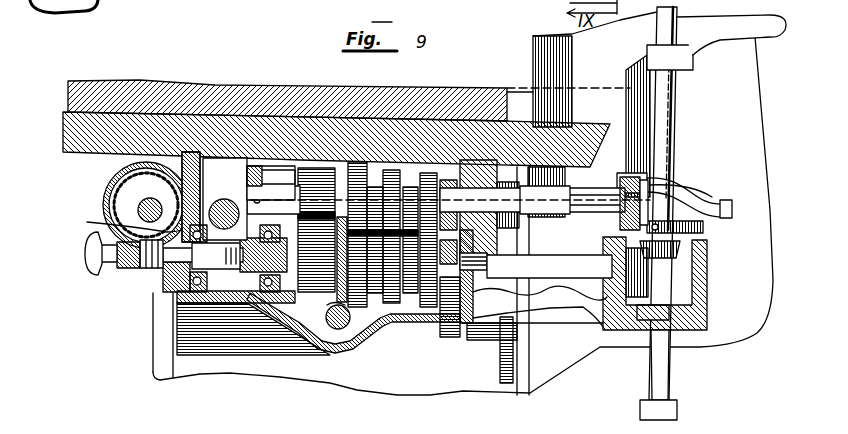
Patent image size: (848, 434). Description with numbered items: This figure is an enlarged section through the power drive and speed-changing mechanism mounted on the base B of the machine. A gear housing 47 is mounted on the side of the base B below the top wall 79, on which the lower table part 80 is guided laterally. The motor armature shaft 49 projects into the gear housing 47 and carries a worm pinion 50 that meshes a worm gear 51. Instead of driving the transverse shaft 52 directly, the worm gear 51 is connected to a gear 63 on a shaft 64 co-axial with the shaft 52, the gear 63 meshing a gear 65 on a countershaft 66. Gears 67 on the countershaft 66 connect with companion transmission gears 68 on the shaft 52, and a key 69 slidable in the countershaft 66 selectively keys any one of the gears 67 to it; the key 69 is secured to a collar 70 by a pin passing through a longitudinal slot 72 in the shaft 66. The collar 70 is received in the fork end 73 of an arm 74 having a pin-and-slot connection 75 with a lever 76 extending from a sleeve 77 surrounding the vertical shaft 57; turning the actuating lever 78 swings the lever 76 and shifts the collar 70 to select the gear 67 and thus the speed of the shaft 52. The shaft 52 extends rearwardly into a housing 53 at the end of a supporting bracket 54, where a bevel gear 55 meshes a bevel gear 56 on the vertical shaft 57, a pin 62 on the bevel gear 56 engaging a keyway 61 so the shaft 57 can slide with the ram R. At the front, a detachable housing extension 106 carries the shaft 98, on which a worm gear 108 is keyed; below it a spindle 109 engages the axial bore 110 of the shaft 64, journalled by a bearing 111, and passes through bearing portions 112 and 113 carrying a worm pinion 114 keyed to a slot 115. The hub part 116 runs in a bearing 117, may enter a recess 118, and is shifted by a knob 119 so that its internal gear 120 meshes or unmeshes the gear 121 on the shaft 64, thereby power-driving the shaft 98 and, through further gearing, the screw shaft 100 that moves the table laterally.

The gear housing 47 is at (202, 330).
The armature shaft 49 is at (337, 328).
The worm pinion 50 is at (345, 330).
The worm gear 51 is at (330, 302).
The shaft 52 is at (577, 245).
The housing 53 is at (707, 321).
The supporting bracket 54 is at (466, 330).
The bevel gear 55 is at (650, 283).
The bevel gear 56 is at (670, 260).
The vertical shaft 57 is at (677, 12).
The keyway 61 is at (665, 352).
The pin 62 is at (705, 233).
The gear 63 is at (247, 300).
The shaft 64 is at (250, 330).
The gear 65 is at (313, 170).
The countershaft 66 is at (479, 203).
The gears 67 is at (374, 166).
The transmission gears 68 is at (415, 307).
The key 69 is at (432, 172).
The collar 70 is at (635, 190).
The longitudinal slot 72 is at (564, 207).
The fork end 73 is at (622, 196).
The arm 74 is at (688, 205).
The pin-and-slot connection 75 is at (732, 212).
The lever 76 is at (712, 197).
The sleeve 77 is at (663, 116).
The actuating lever 78 is at (730, 31).
The top wall 79 is at (63, 135).
The lower table part 80 is at (153, 86).
The shaft 98 is at (150, 210).
The screw shaft 100 is at (226, 205).
The housing extension 106 is at (176, 275).
The worm gear 108 is at (140, 178).
The shaft or spindle 109 is at (118, 268).
The axial bore 110 is at (205, 373).
The bearing 111 is at (293, 170).
The bearing portion 112 is at (135, 270).
The bearing portion 113 is at (168, 272).
The worm pinion 114 is at (158, 270).
The slot 115 is at (122, 221).
The hub part 116 is at (214, 262).
The bearing 117 is at (206, 225).
The recess 118 is at (188, 282).
The knob 119 is at (88, 260).
The internal gear 120 is at (262, 210).
The gear 121 is at (270, 181).
The stand R is at (743, 108).
The base B is at (247, 372).